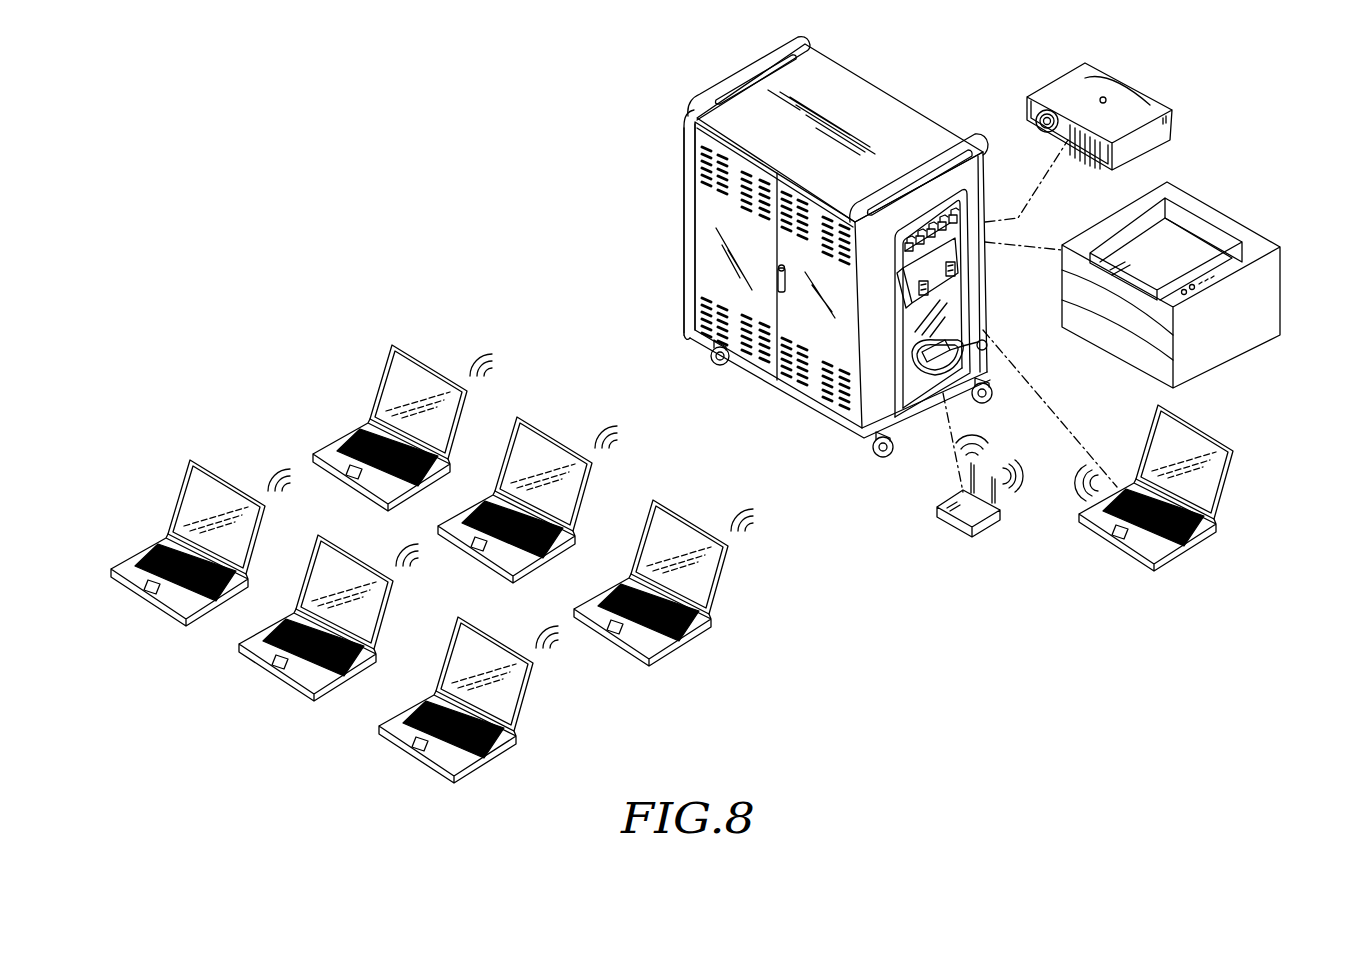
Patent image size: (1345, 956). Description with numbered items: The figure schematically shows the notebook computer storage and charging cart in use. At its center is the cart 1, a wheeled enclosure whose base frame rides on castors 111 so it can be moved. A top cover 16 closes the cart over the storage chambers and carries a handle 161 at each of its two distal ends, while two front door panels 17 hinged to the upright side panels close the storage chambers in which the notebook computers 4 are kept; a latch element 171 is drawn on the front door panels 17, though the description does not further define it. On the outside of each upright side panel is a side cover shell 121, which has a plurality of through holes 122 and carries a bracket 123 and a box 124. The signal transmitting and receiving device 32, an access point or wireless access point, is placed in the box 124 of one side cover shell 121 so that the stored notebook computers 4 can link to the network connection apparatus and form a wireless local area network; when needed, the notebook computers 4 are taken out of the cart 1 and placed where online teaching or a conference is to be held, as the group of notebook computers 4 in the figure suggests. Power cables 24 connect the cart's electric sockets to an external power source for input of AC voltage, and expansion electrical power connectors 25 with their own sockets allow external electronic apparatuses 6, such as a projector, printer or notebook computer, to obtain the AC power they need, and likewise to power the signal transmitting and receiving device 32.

The cart 1 is at (856, 266).
The notebook computer 4 is at (305, 371).
The external electronic apparatus 6 is at (1289, 90).
The top cover 16 is at (882, 106).
The front door panel 17 is at (712, 280).
The power cable 24 is at (962, 368).
The expansion electrical power connector 25 is at (900, 258).
The signal transmitting and receiving device 32 is at (967, 513).
The castor 111 is at (722, 364).
The side cover shell 121 is at (688, 176).
The through hole 122 is at (992, 338).
The bracket 123 is at (928, 378).
The box 124 is at (965, 258).
The handle 161 is at (757, 62).
The door latch 171 is at (770, 279).